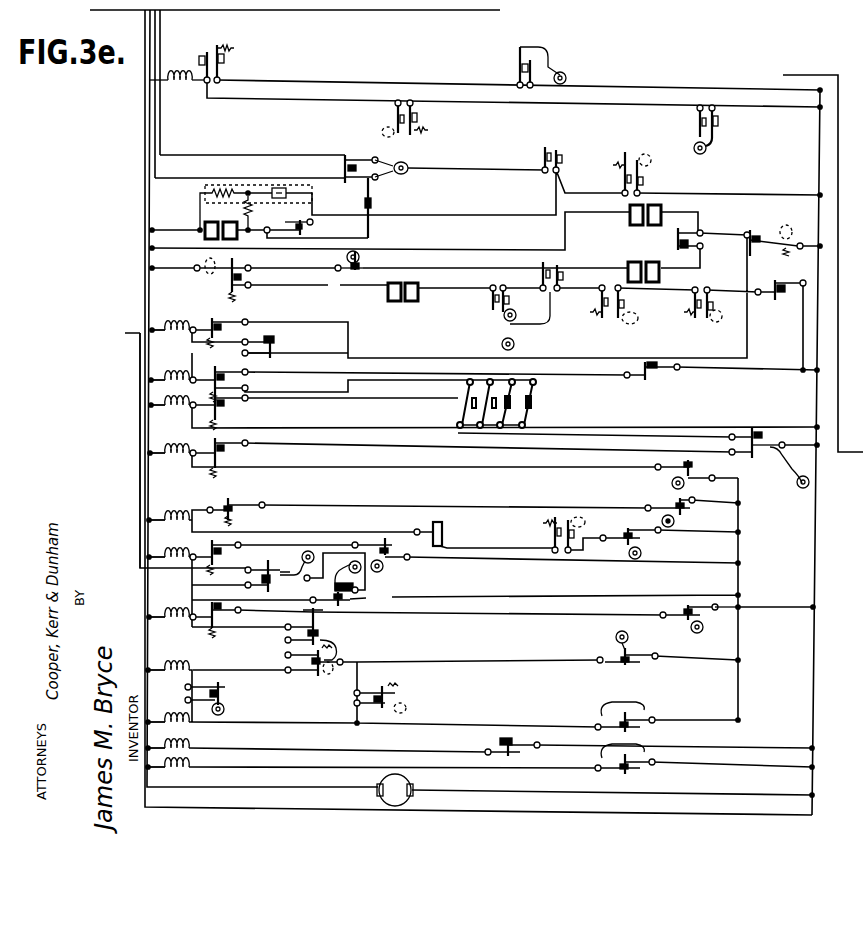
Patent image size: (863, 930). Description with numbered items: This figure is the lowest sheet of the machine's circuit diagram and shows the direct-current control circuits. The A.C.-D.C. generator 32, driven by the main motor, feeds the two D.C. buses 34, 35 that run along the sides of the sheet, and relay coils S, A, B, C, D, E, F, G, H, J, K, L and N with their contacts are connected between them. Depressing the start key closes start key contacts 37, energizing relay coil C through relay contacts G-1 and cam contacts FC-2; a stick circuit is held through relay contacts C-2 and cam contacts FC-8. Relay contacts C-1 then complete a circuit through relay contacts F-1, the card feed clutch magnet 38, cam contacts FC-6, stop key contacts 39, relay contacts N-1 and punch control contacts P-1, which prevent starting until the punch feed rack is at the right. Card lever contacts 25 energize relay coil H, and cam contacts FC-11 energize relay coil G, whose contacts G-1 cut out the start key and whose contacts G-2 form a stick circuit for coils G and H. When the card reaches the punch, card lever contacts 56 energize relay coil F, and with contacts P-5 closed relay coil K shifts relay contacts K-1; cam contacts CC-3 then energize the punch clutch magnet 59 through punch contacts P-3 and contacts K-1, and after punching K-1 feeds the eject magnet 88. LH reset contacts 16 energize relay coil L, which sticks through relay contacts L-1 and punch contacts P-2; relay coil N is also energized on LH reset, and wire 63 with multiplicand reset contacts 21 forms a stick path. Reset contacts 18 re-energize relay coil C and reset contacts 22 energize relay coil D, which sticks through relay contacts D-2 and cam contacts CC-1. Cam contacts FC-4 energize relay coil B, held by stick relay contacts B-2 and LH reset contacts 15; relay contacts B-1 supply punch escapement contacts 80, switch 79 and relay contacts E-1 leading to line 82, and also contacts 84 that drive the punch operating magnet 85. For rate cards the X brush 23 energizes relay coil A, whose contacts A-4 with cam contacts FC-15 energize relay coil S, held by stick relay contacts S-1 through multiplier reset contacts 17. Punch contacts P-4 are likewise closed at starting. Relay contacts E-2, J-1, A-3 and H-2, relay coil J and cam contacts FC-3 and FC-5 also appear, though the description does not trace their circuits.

The bus 34 is at (161, 38).
The line 82 is at (165, 153).
The bus 35 is at (160, 185).
The wire 63 is at (140, 333).
The relay coil S is at (178, 89).
The stick relay contacts S-1 is at (224, 67).
The multiplier reset contacts 17 is at (516, 76).
The relay coil A is at (382, 126).
The supplemental relay contacts A-4 is at (416, 115).
The cam contacts FC-15 is at (718, 118).
The relay contacts E-1 is at (348, 160).
The switch 79 is at (406, 172).
The punch escapement contacts 80 is at (560, 160).
The relay coil B is at (646, 156).
The relay contacts B-1 is at (642, 188).
The punch contacts 84 is at (306, 226).
The relay coil E is at (375, 198).
The punch operating magnet 85 is at (236, 236).
The eject magnet 88 is at (628, 224).
The punch clutch magnet 59 is at (643, 261).
The punch contacts P-3 is at (698, 234).
The relay coil K is at (792, 226).
The relay contacts K-1 is at (756, 254).
The punch control contacts P-1 is at (788, 300).
The relay coil F is at (204, 266).
The relay contacts F-1 is at (242, 284).
The cam contacts CC-3 is at (369, 267).
The card feed clutch magnet 38 is at (403, 303).
The cam contacts FC-6 is at (493, 299).
The stop key contacts 39 is at (554, 282).
The relay contacts N-1 is at (598, 301).
The relay coil N is at (638, 320).
The relay contacts C-1 is at (692, 298).
The relay coil C is at (712, 322).
The relay E contact E-2 is at (236, 322).
The punch contacts P-4 is at (280, 350).
The relay J coil J is at (178, 376).
The relay J contact J-1 is at (242, 376).
The punch contacts P-2 is at (644, 374).
The relay coil L is at (175, 418).
The relay contacts L-1 is at (230, 403).
The stick relay contacts B-2 is at (242, 450).
The LH reset contacts 16 is at (769, 438).
The LH reset contacts 15 is at (751, 454).
The cam contacts FC-4 is at (694, 473).
The relay A contact A-3 is at (250, 503).
The feed control contact FC-3 is at (685, 515).
The X brush 23 is at (424, 522).
The relay coil H is at (586, 522).
The relay H contact H-2 is at (553, 545).
The feed control contact FC-5 is at (650, 542).
The relay coil D is at (168, 554).
The relay contacts D-2 is at (228, 550).
The cam contacts CC-1 is at (393, 555).
The reset contacts 22 is at (275, 587).
The multiplicand reset contacts 21 is at (274, 568).
The start key contacts 37 is at (337, 626).
The reset contacts 18 is at (352, 599).
The relay contacts C-2 is at (232, 622).
The three-blade relay contacts G-1 is at (286, 661).
The relay coil G is at (324, 678).
The cam contacts FC-8 is at (684, 620).
The cam contacts FC-2 is at (642, 668).
The cam contacts FC-11 is at (228, 690).
The relay contacts G-2 is at (376, 692).
The card lever contacts 25 is at (643, 730).
The punch contacts P-5 is at (525, 752).
The card lever contacts 56 is at (643, 772).
The A.-D.C. generator 32 is at (378, 783).